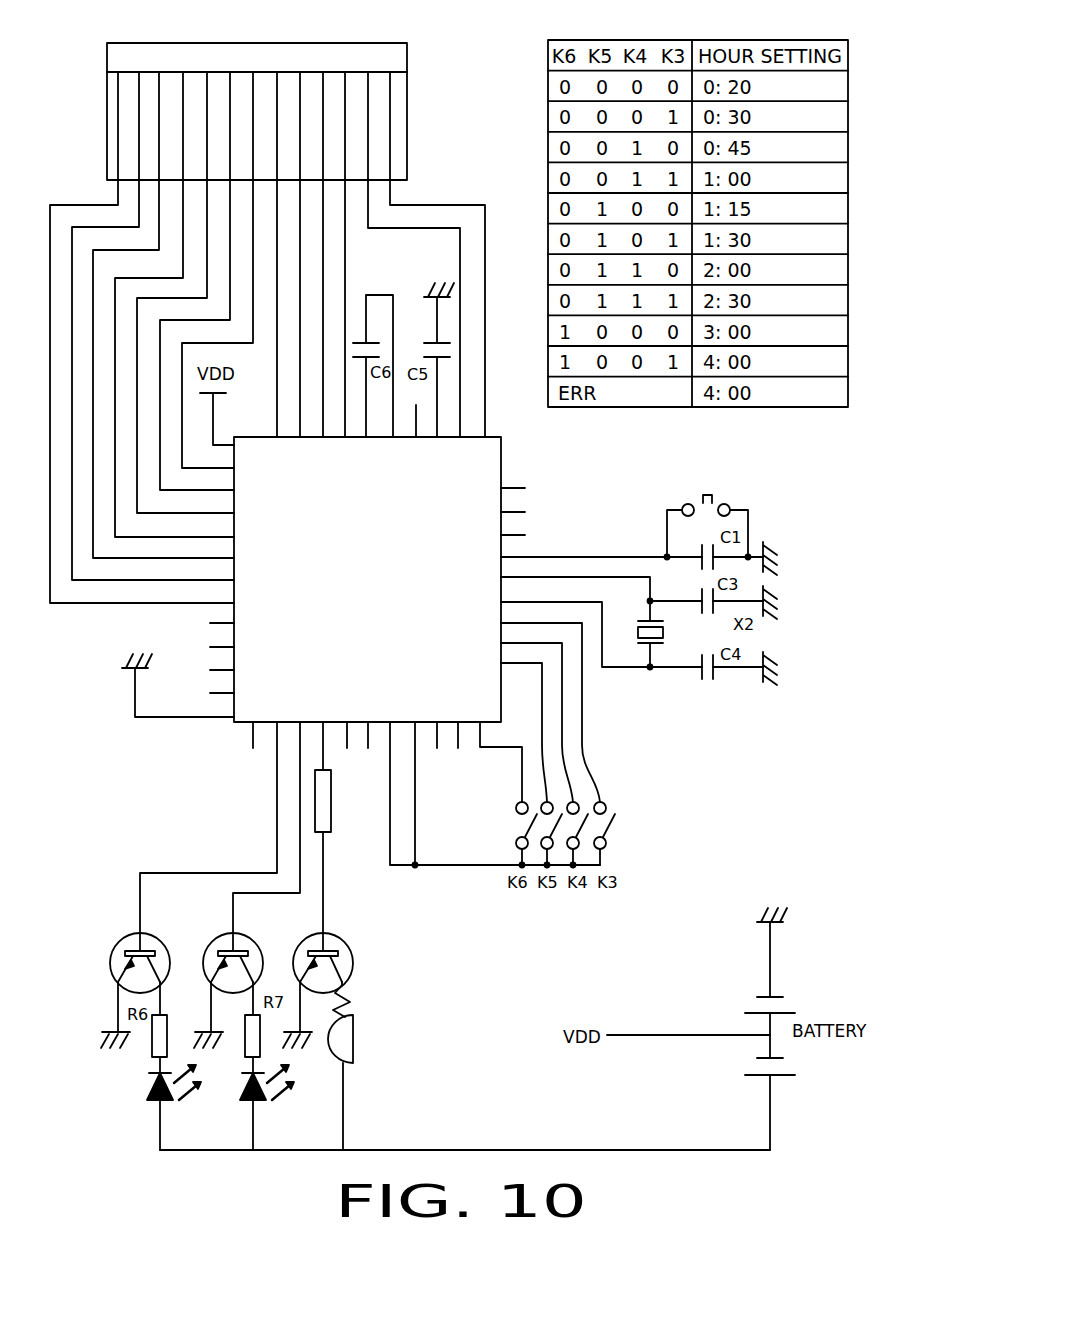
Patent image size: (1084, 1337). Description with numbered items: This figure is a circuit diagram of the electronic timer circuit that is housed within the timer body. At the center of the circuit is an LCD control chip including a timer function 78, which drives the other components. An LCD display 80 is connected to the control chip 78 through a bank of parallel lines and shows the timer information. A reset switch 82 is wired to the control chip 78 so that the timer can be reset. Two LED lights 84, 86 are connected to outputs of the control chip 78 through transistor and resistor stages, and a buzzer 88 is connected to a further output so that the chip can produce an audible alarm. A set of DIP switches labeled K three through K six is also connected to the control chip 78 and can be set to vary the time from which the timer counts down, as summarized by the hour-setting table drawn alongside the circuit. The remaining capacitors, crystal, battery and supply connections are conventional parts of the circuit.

The LCD control chip including a timer function 78 is at (502, 468).
The LCD display 80 is at (407, 163).
The reset switch 82 is at (695, 500).
The LED light 84 is at (150, 1088).
The LED light 86 is at (262, 1097).
The buzzer 88 is at (357, 1025).